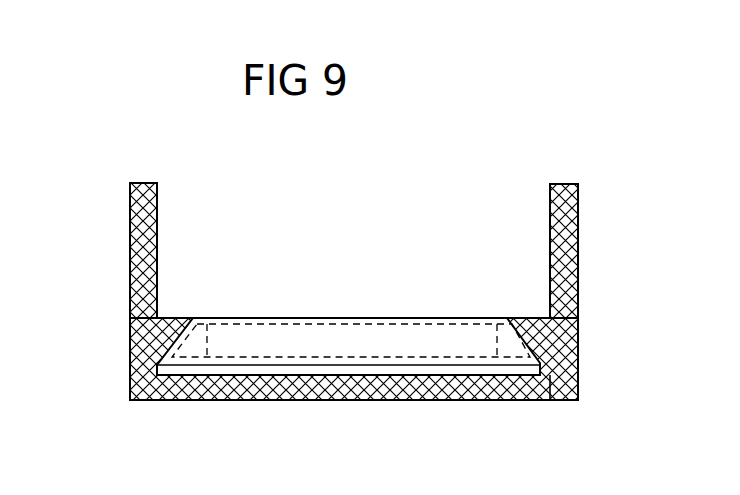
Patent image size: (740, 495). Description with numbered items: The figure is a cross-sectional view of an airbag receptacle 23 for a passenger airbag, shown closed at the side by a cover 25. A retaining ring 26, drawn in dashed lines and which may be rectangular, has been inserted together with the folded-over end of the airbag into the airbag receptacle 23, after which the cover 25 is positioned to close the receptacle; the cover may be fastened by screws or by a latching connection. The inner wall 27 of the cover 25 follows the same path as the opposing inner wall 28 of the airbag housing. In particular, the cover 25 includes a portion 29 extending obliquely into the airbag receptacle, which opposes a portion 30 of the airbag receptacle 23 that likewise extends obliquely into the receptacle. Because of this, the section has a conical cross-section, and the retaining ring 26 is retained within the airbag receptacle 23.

The airbag receptacle 23 is at (155, 228).
The cover 25 is at (577, 219).
The retaining ring 26 is at (513, 353).
The inner wall of the cover 27 is at (548, 270).
The inner wall of the airbag housing 28 is at (157, 273).
The obliquely extending portion of the cover 29 is at (578, 340).
The obliquely extending portion of the airbag receptacle 30 is at (145, 342).